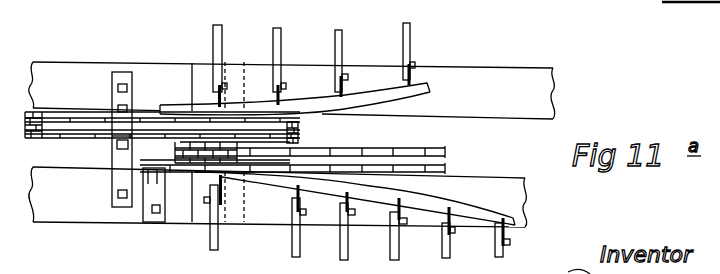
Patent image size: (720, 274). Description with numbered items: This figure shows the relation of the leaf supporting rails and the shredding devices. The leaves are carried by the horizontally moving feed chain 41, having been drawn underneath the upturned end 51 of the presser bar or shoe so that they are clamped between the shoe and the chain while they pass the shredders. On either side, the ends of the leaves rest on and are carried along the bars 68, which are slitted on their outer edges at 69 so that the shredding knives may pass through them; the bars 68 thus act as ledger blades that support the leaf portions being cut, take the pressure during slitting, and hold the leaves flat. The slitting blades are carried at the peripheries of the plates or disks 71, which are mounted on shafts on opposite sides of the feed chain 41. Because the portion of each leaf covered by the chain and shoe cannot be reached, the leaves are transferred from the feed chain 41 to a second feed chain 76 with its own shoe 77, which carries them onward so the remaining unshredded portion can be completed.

The second feed chain 76 is at (65, 112).
The shoe 77 is at (65, 125).
The slits 69 is at (336, 98).
The bars 68 is at (376, 93).
The upturned end 51 is at (380, 162).
The feed chain 41 is at (442, 156).
The plates or disks 71 is at (493, 242).